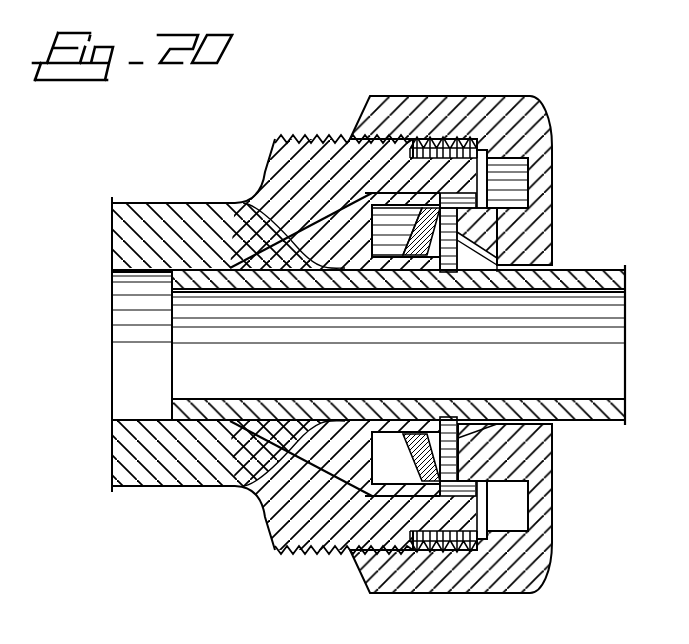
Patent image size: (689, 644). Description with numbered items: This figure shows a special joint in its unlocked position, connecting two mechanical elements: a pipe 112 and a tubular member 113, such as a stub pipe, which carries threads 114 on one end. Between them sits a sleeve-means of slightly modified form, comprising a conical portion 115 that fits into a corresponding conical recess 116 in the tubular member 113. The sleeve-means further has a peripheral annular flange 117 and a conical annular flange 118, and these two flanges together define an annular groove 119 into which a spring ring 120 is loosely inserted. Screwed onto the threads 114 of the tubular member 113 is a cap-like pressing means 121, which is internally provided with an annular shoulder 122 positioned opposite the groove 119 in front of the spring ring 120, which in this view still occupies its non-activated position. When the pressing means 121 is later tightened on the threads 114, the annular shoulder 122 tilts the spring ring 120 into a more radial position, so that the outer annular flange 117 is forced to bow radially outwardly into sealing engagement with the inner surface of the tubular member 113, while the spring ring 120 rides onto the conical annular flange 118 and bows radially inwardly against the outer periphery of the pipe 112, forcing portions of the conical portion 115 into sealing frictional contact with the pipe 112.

The pipe 112 is at (570, 270).
The tubular member 113 is at (168, 216).
The threads 114 is at (283, 130).
The conical portion 115 is at (243, 203).
The conical recess 116 is at (250, 490).
The peripheral annular flange 117 is at (408, 197).
The conical annular flange 118 is at (458, 396).
The annular groove 119 is at (380, 465).
The spring ring 120 is at (443, 455).
The cap-like pressing means 121 is at (532, 124).
The annular shoulder 122 is at (470, 224).